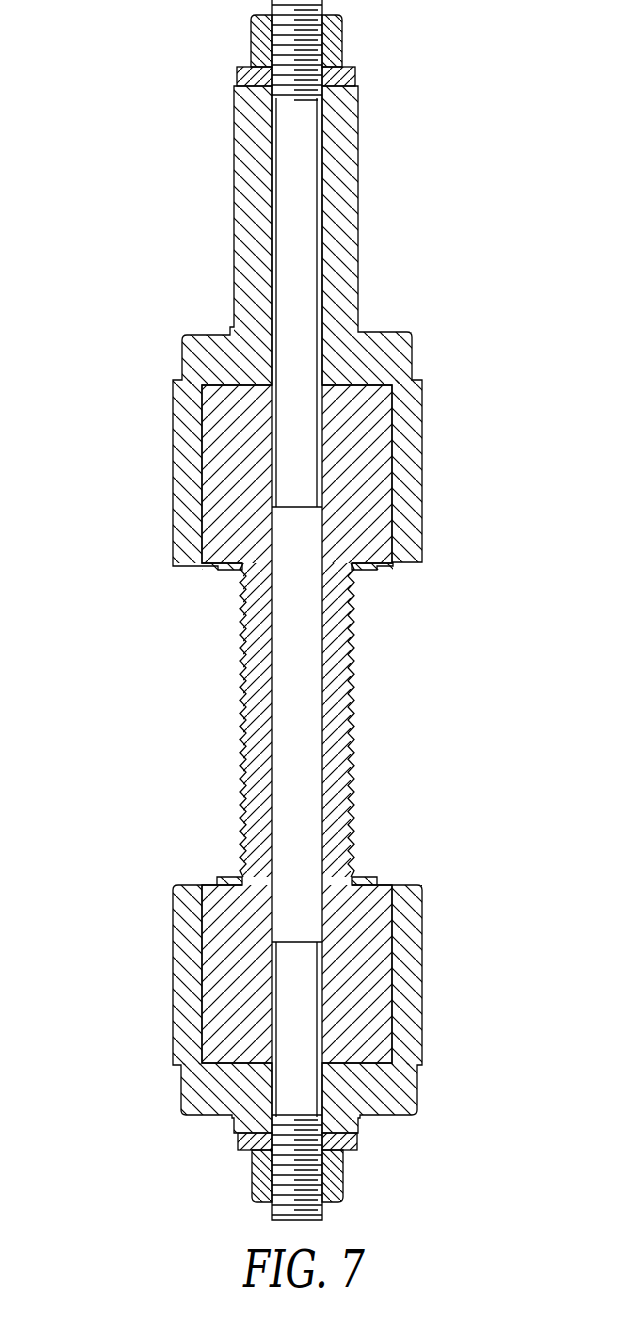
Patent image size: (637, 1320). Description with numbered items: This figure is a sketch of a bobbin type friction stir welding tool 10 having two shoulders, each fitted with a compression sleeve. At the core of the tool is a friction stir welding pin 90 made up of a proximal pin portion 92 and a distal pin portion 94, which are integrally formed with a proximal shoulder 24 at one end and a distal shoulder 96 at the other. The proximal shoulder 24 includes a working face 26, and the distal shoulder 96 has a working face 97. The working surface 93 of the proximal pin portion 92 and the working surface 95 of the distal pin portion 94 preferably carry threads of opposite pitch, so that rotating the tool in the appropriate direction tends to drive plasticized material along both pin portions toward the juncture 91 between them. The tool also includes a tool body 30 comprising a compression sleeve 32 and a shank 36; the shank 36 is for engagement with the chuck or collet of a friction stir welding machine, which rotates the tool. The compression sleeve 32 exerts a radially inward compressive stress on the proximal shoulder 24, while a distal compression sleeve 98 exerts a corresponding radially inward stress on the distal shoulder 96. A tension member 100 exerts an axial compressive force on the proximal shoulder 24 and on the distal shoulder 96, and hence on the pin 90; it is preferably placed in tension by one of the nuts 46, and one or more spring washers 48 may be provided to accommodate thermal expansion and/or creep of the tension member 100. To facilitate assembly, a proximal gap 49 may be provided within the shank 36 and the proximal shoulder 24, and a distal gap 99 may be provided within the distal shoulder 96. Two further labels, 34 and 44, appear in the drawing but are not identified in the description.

The friction stir welding tool 10 is at (112, 168).
The proximal shoulder 24 is at (200, 456).
The working face 26 is at (373, 573).
The tool body 30 is at (402, 382).
The compression sleeve 32 is at (415, 445).
The inner nut block 34 is at (208, 412).
The shank 36 is at (355, 220).
The threaded rod end 44 is at (340, 30).
The nut 46 is at (255, 36).
The spring washer 48 is at (350, 74).
The proximal gap 49 is at (272, 221).
The friction stir welding pin 90 is at (354, 690).
The juncture 91 is at (243, 727).
The proximal pin portion 92 is at (243, 604).
The working surface 93 is at (353, 612).
The distal pin portion 94 is at (243, 780).
The working surface 95 is at (355, 777).
The distal shoulder 96 is at (217, 920).
The working face 97 is at (358, 878).
The distal compression sleeve 98 is at (420, 967).
The distal gap 99 is at (270, 1068).
The tension member 100 is at (282, 680).